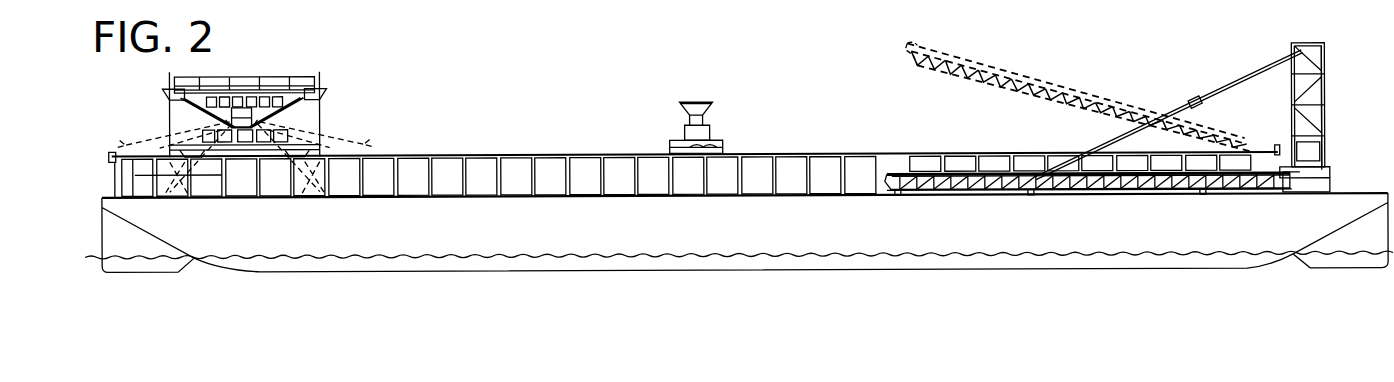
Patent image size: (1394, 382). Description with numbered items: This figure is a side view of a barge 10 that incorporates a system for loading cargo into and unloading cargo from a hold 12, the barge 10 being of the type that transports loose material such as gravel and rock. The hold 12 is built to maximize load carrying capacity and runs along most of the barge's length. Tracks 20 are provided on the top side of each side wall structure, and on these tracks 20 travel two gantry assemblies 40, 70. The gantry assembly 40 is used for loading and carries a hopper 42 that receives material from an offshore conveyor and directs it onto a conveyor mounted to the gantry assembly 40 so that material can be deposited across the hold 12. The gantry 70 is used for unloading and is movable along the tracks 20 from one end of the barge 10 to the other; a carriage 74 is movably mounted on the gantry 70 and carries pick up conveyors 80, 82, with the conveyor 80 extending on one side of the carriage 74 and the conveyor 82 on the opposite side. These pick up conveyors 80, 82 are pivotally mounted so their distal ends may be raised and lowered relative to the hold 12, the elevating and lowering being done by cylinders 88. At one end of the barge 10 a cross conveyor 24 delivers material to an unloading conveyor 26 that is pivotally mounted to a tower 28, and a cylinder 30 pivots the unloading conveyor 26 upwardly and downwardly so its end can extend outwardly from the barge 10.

The barge 10 is at (519, 152).
The hold 12 is at (826, 172).
The tracks 20 is at (792, 153).
The cross conveyor 24 is at (1330, 180).
The unloading conveyor 26 is at (996, 170).
The tower 28 is at (1327, 89).
The cylinder 30 is at (1177, 108).
The gantry assembly 40 is at (674, 138).
The hopper 42 is at (712, 101).
The gantry assembly 70 is at (313, 68).
The carriage 74 is at (237, 90).
The pick up conveyor 80 is at (368, 124).
The pick up conveyor 82 is at (137, 126).
The cylinders 88 is at (168, 110).